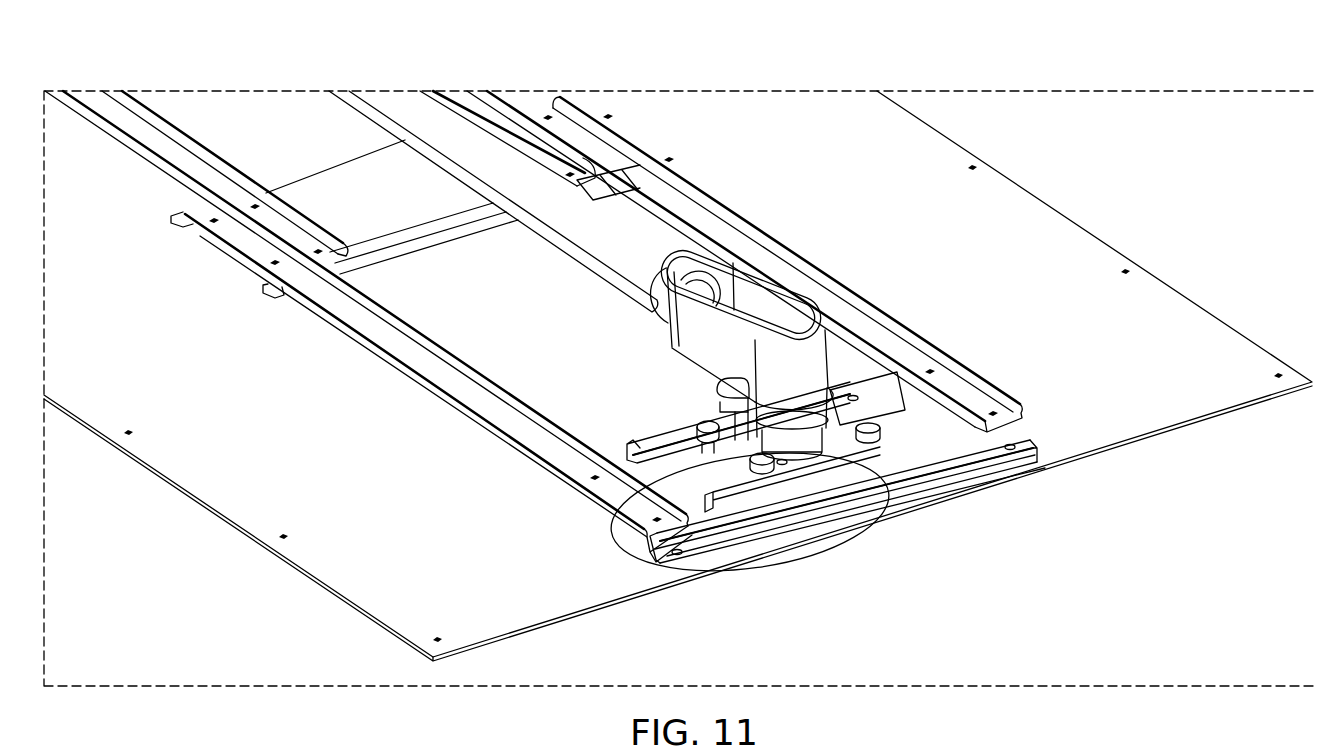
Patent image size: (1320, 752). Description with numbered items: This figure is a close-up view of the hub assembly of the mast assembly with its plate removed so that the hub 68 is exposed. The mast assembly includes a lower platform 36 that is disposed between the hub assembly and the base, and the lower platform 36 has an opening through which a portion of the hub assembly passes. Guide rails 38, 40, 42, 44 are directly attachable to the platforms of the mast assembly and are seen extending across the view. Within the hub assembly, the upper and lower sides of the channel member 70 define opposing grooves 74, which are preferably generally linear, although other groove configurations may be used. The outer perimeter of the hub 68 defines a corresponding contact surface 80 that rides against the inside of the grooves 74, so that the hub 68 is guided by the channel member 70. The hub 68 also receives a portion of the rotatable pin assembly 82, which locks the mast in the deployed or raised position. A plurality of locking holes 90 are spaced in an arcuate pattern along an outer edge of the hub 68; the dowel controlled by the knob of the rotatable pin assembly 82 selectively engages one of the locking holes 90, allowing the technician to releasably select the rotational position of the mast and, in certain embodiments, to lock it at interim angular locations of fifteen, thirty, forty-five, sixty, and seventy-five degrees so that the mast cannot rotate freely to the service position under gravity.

The lower platform 36 is at (730, 520).
The guide rail 38 is at (665, 190).
The guide rail 40 is at (497, 128).
The guide rail 42 is at (402, 346).
The guide rail 44 is at (148, 130).
The hub 68 is at (860, 425).
The channel member 70 is at (940, 436).
The grooves 74 is at (613, 476).
The contact surface 80 is at (690, 462).
The rotatable pin assembly 82 is at (723, 393).
The locking holes 90 is at (858, 395).